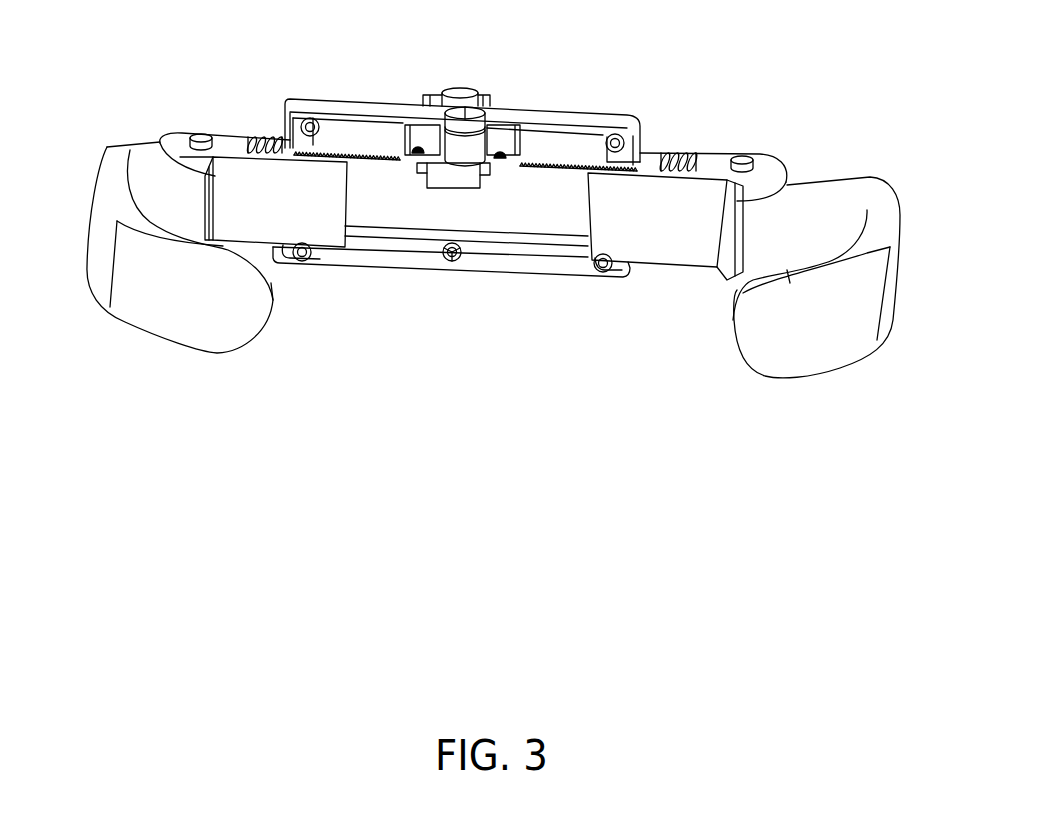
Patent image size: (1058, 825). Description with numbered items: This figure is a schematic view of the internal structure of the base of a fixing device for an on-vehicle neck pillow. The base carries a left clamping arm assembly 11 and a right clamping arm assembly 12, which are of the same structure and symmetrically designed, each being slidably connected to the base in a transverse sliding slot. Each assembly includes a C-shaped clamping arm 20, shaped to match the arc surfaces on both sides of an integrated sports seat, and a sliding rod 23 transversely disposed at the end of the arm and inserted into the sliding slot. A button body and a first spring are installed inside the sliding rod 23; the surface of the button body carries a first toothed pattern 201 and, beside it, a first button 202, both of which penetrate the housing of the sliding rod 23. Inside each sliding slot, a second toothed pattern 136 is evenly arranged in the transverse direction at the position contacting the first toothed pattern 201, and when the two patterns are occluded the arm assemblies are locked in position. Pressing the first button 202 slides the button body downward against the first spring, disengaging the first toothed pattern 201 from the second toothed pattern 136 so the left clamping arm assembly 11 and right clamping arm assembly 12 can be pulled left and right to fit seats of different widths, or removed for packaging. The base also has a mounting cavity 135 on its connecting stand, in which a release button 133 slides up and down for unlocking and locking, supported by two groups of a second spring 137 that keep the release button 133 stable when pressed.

The left clamping arm assembly 11 is at (170, 130).
The right clamping arm assembly 12 is at (782, 167).
The C-shaped clamping arm 20 is at (97, 183).
The sliding rod 23 is at (308, 217).
The release button 133 is at (485, 102).
The mounting cavity 135 is at (432, 92).
The second toothed pattern 136 is at (343, 153).
The second spring 137 is at (500, 160).
The first toothed pattern 201 is at (260, 140).
The first button 202 is at (202, 136).